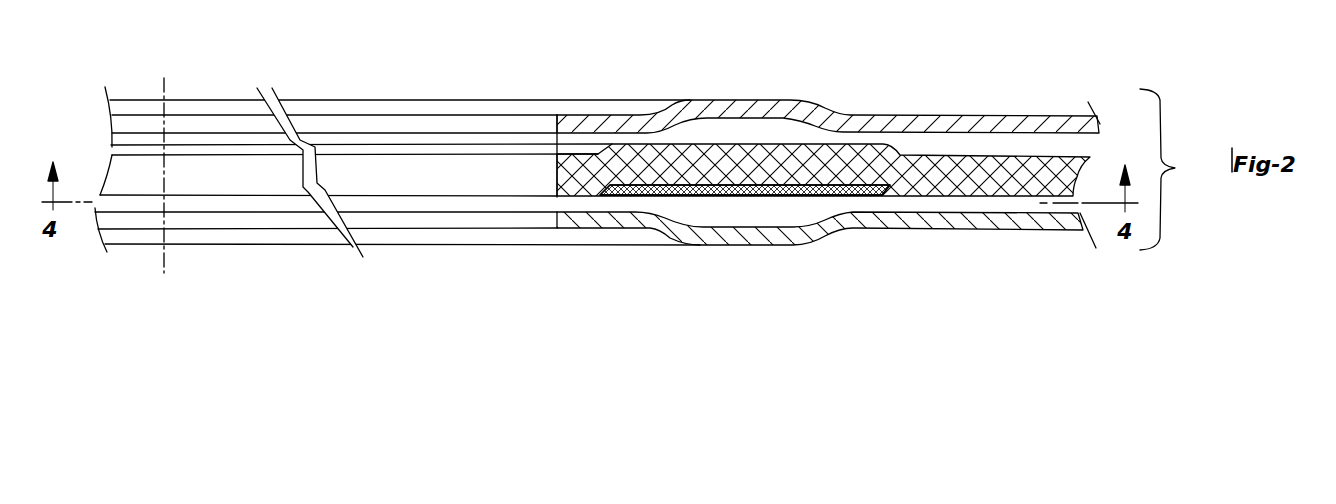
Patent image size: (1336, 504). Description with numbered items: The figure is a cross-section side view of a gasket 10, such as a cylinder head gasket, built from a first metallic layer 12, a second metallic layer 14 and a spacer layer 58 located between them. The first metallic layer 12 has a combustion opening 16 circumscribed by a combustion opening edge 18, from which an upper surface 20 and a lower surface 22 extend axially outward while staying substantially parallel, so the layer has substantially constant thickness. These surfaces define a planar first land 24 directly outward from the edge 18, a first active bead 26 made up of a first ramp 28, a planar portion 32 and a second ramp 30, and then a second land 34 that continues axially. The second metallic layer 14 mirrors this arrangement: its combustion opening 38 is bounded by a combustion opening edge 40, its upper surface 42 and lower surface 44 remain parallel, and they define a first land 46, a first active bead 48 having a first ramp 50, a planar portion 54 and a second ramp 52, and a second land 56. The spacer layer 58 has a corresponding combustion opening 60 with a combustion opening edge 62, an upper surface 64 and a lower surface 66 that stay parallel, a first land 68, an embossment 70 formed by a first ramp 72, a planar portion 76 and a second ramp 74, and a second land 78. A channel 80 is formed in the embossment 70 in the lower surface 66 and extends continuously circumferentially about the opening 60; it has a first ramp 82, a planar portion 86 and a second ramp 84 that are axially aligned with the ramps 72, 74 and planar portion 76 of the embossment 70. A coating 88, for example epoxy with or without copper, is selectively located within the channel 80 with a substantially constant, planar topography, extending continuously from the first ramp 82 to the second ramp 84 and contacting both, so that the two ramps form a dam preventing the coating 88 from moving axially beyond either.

The gasket 10 is at (1171, 169).
The first metallic layer 12 is at (1098, 128).
The second metallic layer 14 is at (1086, 218).
The combustion opening 16 is at (320, 122).
The combustion opening edge 18 is at (553, 122).
The upper surface 20 is at (640, 115).
The lower surface 22 is at (612, 133).
The first land 24 is at (590, 116).
The first active bead 26 is at (740, 105).
The first ramp 28 is at (687, 112).
The second ramp 30 is at (820, 115).
The planar portion 32 is at (757, 100).
The second land 34 is at (950, 125).
The combustion opening 38 is at (413, 222).
The combustion opening edge 40 is at (553, 215).
The upper surface 42 is at (577, 203).
The lower surface 44 is at (593, 230).
The first land 46 is at (610, 212).
The first active bead 48 is at (718, 243).
The first ramp 50 is at (665, 230).
The second ramp 52 is at (818, 230).
The planar portion 54 is at (760, 247).
The second land 56 is at (1035, 223).
The spacer layer 58 is at (1080, 177).
The combustion opening 60 is at (342, 170).
The combustion opening edge 62 is at (552, 186).
The upper surface 64 is at (985, 155).
The lower surface 66 is at (962, 195).
The first land 68 is at (565, 167).
The embossment 70 is at (742, 158).
The first ramp 72 is at (598, 153).
The second ramp 74 is at (897, 155).
The planar portion 76 is at (785, 145).
The second land 78 is at (1033, 170).
The channel 80 is at (808, 185).
The first ramp 82 is at (597, 187).
The second ramp 84 is at (878, 197).
The planar portion 86 is at (760, 183).
The coating 88 is at (702, 223).